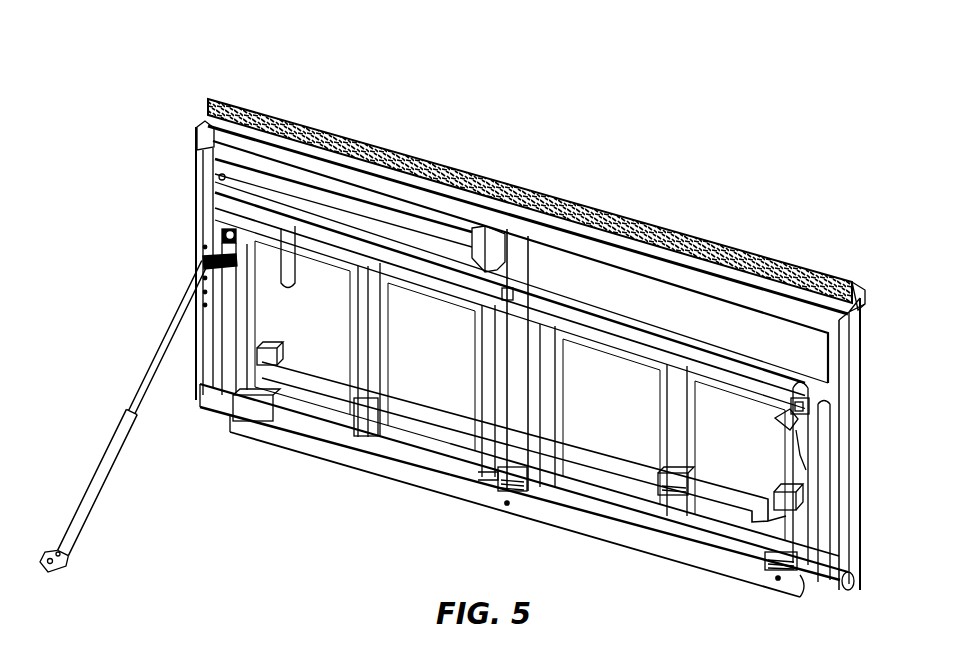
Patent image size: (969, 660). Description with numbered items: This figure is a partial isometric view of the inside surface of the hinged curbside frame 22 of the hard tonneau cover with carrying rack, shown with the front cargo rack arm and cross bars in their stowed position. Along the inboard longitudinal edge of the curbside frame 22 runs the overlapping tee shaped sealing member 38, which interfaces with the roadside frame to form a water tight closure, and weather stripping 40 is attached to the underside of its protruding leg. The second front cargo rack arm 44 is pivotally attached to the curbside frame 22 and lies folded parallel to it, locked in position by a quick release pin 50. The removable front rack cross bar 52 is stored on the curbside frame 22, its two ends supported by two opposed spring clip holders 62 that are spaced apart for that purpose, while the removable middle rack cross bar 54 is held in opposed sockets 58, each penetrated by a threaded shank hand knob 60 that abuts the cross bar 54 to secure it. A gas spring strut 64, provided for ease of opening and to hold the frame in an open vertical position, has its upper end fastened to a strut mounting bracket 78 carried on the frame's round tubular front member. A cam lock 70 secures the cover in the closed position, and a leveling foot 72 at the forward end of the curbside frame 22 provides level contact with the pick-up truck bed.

The curbside frame 22 is at (737, 257).
The tee shaped sealing member 38 is at (380, 150).
The weather stripping 40 is at (232, 101).
The second front cargo rack arm 44 is at (484, 262).
The quick release pin 50 is at (213, 177).
The front rack cross bar 52 is at (591, 468).
The middle rack cross bar 54 is at (783, 367).
The socket 58 is at (823, 411).
The threaded shank hand knob 60 is at (800, 449).
The spring clip holder 62 is at (667, 522).
The gas spring strut 64 is at (95, 503).
The cam lock 70 is at (861, 292).
The leveling foot 72 is at (205, 138).
The strut mounting bracket 78 is at (196, 303).